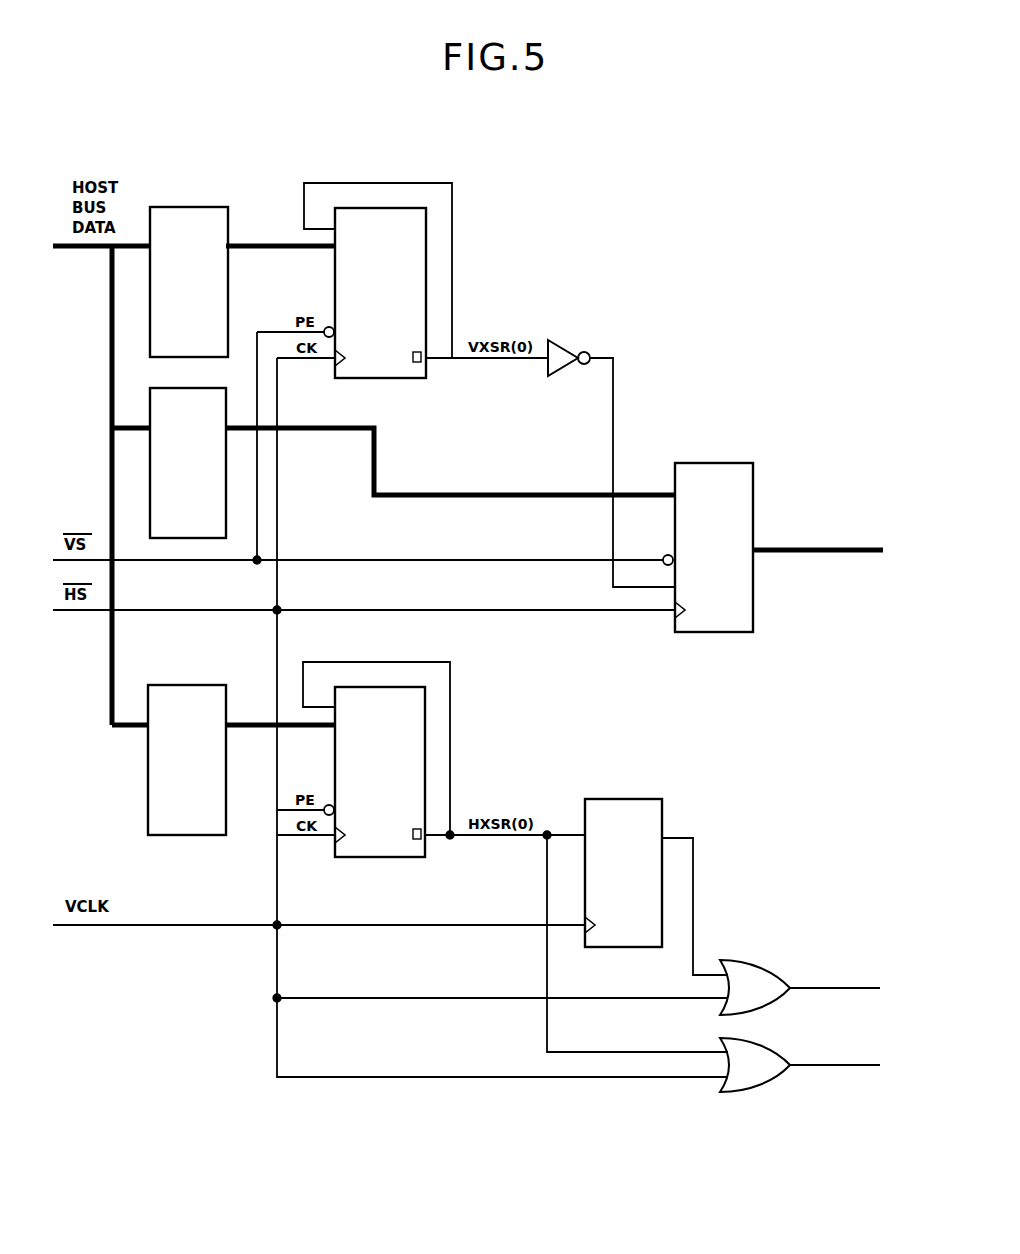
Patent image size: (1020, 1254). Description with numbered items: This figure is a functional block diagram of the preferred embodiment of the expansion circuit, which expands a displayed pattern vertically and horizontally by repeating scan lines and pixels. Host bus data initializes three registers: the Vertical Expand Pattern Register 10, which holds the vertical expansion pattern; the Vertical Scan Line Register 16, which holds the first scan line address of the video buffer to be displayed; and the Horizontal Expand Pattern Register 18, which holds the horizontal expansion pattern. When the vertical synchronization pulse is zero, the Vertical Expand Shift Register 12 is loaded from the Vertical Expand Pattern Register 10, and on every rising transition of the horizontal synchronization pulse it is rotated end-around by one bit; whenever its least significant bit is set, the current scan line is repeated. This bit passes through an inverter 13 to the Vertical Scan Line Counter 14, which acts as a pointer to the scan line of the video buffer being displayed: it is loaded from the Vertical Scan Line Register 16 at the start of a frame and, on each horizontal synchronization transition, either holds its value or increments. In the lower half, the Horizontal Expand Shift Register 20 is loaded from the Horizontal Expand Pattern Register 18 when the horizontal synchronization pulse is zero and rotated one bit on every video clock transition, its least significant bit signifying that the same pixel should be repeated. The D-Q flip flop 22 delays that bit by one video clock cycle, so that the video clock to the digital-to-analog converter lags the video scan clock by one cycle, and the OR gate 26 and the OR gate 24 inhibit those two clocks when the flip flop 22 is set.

The Vertical Expand Pattern Register 10 is at (192, 207).
The Vertical Expand Shift Register 12 is at (390, 378).
The inverter 13 is at (560, 350).
The Vertical Scan Line Counter 14 is at (711, 462).
The Vertical Scan Line Register 16 is at (150, 466).
The Horizontal Expand Pattern Register 18 is at (194, 685).
The Horizontal Expand Shift Register 20 is at (378, 857).
The D-Q flip flop 22 is at (620, 800).
The OR gate 24 is at (773, 1080).
The OR gate 26 is at (768, 972).